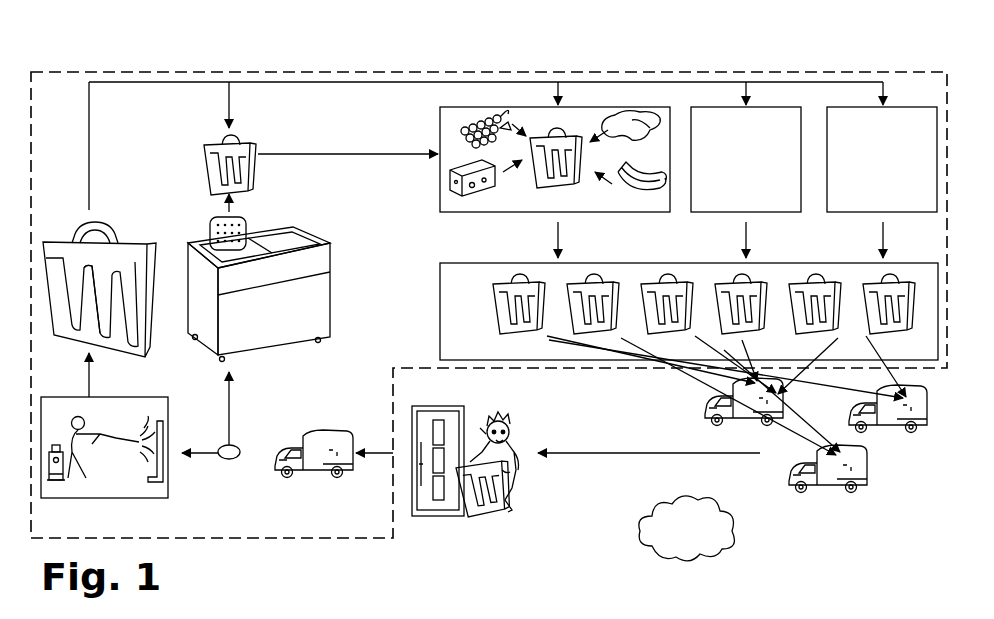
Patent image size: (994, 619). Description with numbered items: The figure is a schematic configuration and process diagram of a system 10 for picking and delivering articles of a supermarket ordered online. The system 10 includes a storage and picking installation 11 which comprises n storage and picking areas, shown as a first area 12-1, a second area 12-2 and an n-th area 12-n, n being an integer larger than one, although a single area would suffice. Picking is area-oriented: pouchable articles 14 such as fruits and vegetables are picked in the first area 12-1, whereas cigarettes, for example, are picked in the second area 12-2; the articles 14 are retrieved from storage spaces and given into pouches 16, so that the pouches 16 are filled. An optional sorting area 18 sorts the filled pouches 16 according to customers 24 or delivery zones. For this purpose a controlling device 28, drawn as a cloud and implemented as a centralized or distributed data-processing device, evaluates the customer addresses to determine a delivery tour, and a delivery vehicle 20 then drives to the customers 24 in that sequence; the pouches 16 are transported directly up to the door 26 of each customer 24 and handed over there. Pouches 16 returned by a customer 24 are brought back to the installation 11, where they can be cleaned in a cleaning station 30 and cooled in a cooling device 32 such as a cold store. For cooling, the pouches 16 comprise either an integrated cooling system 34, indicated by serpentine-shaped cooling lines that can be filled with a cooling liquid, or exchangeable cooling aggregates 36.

The system 10 is at (287, 56).
The storage and picking installation 11 is at (709, 72).
The first storage and picking area 12-1 is at (440, 193).
The second storage and picking area 12-2 is at (729, 167).
The n-th storage and picking area 12-n is at (899, 167).
The articles 14 is at (462, 168).
The pouches 16 is at (257, 172).
The sorting area 18 is at (440, 312).
The delivery vehicle 20 is at (314, 480).
The customer 24 is at (516, 420).
The door 26 is at (438, 516).
The controlling device 28 is at (677, 537).
The cleaning station 30 is at (173, 491).
The cooling device 32 is at (286, 352).
The integrated cooling system 34 is at (125, 258).
The exchangeable cooling aggregates 36 is at (247, 220).